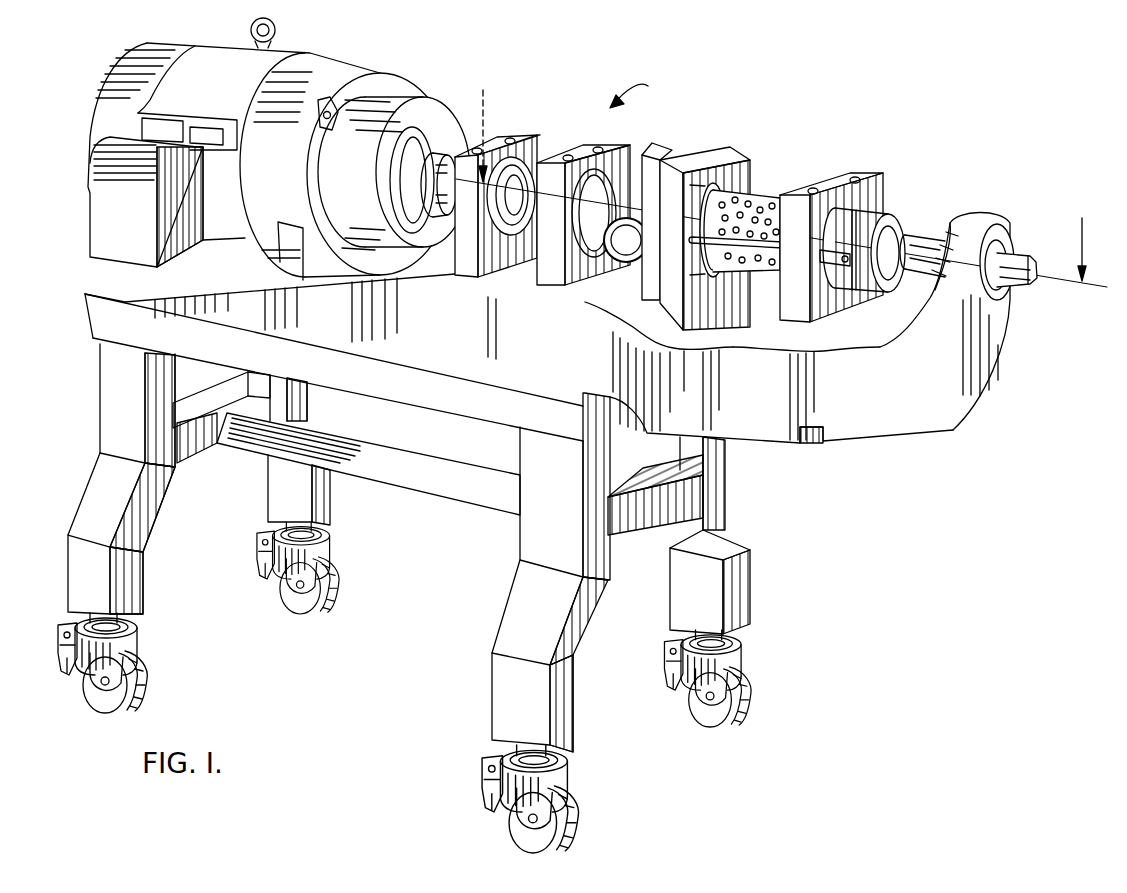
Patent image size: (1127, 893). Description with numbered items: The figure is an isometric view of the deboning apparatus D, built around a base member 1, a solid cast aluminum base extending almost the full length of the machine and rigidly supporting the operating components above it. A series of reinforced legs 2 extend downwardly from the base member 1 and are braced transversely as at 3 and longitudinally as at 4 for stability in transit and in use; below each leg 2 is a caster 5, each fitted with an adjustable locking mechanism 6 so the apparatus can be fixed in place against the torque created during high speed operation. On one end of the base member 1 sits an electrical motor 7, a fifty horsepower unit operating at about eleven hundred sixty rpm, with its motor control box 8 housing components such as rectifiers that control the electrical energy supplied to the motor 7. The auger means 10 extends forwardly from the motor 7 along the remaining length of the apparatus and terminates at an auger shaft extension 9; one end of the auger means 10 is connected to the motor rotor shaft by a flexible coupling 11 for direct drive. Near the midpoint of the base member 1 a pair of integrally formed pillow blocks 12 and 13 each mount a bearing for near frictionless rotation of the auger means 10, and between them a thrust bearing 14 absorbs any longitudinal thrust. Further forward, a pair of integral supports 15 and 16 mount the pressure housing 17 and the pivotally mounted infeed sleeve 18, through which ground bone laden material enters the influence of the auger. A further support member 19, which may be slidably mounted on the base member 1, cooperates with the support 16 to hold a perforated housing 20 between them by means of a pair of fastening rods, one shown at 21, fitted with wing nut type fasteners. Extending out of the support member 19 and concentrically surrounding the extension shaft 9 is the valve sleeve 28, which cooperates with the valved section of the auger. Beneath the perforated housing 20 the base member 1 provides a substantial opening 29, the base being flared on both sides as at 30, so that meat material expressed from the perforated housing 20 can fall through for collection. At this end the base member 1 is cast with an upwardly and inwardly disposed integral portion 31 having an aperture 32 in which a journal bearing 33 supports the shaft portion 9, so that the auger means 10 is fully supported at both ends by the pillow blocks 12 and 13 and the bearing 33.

The base member 1 is at (845, 420).
The legs 2 is at (766, 584).
The transverse brace 3 is at (188, 454).
The longitudinal brace 4 is at (458, 492).
The caster 5 is at (112, 700).
The locking mechanism 6 is at (56, 655).
The electrical motor 7 is at (337, 56).
The motor control box 8 is at (100, 226).
The auger shaft extension 9 is at (945, 236).
The auger means 10 is at (733, 221).
The flexible coupling 11 is at (417, 107).
The pillow block 12 is at (520, 142).
The pillow block 13 is at (598, 146).
The thrust bearing 14 is at (538, 145).
The support 15 is at (657, 172).
The support 16 is at (756, 162).
The pressure housing 17 is at (700, 165).
The infeed sleeve 18 is at (624, 262).
The support member 19 is at (867, 178).
The perforated housing 20 is at (775, 196).
The fastening rod 21 is at (750, 253).
The valve sleeve 28 is at (906, 224).
The opening 29 is at (703, 322).
The flared portion 30 is at (744, 348).
The integral portion 31 is at (985, 333).
The aperture 32 is at (1006, 250).
The bearing 33 is at (990, 228).
The deboning apparatus D is at (638, 91).